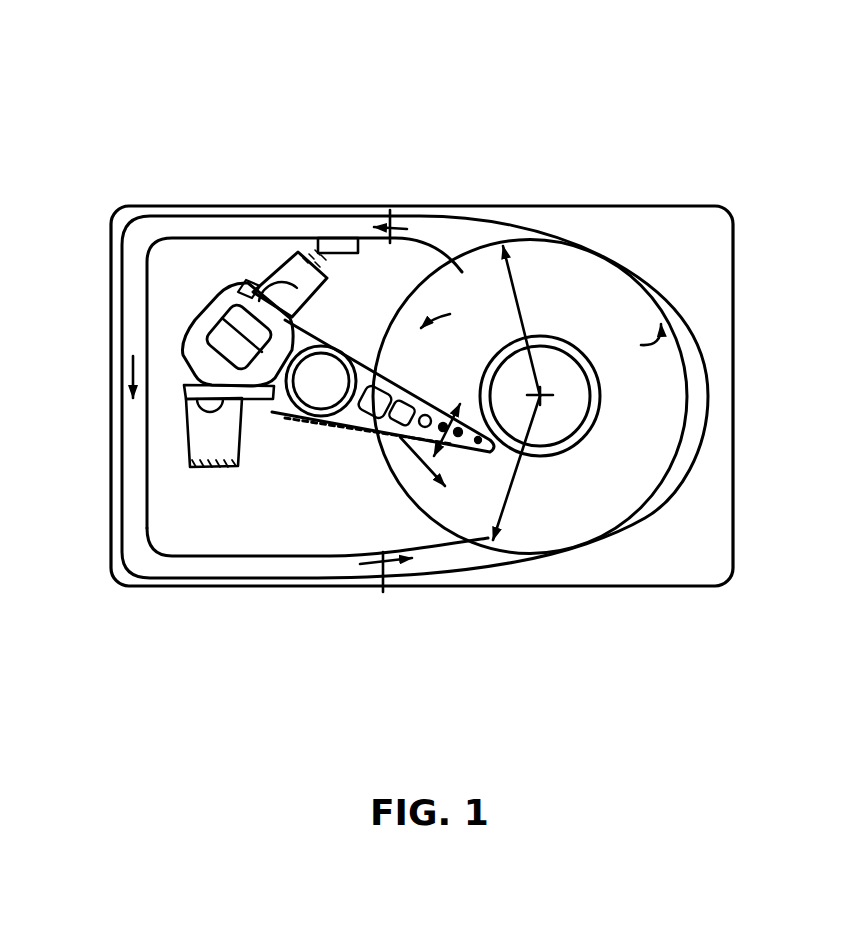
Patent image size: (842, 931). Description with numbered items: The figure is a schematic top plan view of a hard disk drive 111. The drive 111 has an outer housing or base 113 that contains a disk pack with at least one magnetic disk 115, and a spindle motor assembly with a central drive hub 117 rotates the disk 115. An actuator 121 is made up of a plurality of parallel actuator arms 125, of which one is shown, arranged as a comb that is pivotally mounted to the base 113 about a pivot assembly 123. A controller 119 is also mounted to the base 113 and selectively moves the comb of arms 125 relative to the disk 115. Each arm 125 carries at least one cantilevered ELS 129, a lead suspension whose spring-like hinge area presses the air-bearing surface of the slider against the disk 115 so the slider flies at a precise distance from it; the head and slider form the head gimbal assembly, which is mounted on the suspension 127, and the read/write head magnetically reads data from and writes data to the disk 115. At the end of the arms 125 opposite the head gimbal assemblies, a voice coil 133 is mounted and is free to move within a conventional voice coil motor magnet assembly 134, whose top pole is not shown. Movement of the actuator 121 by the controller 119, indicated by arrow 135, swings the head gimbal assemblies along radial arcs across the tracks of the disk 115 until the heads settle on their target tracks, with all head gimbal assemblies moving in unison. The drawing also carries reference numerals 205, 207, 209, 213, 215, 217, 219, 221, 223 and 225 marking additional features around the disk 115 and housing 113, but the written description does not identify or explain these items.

The drive 111 is at (701, 125).
The outer housing or base 113 is at (602, 206).
The magnetic disk 115 is at (614, 265).
The central drive hub 117 is at (553, 342).
The controller 119 is at (350, 254).
The actuator 121 is at (336, 391).
The pivot assembly 123 is at (303, 420).
The actuator arm 125 is at (388, 368).
The suspension 127 is at (412, 393).
The ELS 129 is at (448, 469).
The voice coil 133 is at (209, 300).
The voice coil motor magnet assembly 134 is at (279, 272).
The arrow 135 is at (403, 440).
The disk rotation direction 205 is at (541, 328).
The inner radial position 207 is at (520, 298).
The outer radial position 209 is at (507, 495).
The inner shroud wall 213 is at (453, 251).
The channel outlet 215 is at (487, 534).
The outer housing wall 217 is at (110, 287).
The airflow recirculation channel 219 is at (340, 230).
The channel inlet 221 is at (453, 222).
The channel wall 223 is at (420, 554).
The airflow direction 225 is at (383, 553).